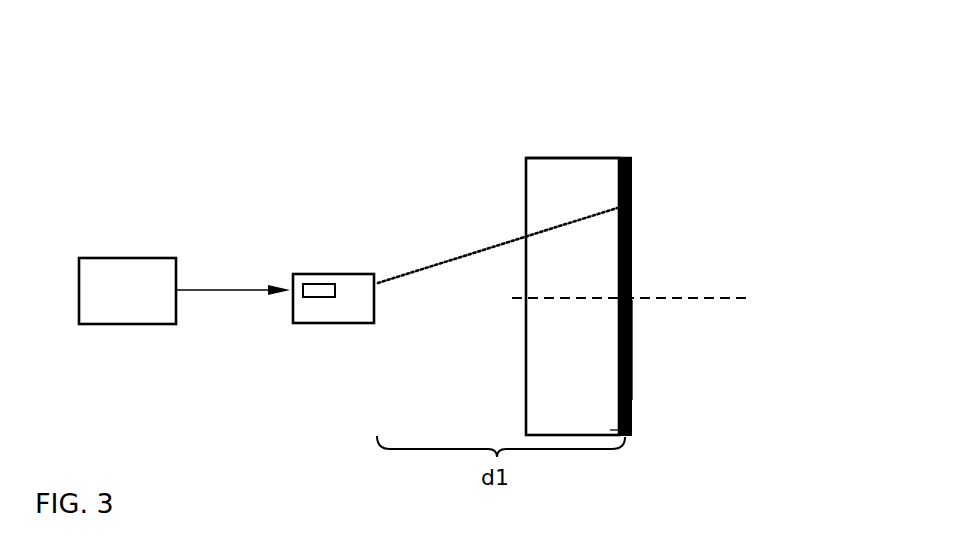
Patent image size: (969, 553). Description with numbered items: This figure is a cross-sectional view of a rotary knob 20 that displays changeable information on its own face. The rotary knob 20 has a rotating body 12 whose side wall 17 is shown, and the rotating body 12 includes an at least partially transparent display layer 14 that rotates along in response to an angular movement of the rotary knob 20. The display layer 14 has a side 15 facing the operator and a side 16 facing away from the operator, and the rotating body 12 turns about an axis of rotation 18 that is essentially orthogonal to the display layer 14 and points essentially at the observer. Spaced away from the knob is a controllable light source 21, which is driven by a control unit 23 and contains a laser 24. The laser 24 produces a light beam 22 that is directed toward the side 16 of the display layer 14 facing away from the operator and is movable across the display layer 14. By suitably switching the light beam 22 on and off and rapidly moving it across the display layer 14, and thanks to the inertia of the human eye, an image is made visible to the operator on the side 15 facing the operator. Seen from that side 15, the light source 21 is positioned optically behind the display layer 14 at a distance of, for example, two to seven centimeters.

The rotating body 12 is at (579, 194).
The display layer 14 is at (625, 233).
The side facing an operator 15 is at (632, 343).
The side facing away from the operator 16 is at (615, 420).
The side wall 17 is at (552, 159).
The axis of rotation 18 is at (723, 298).
The rotary knob 20 is at (620, 249).
The light source 21 is at (332, 275).
The light beam 22 is at (427, 267).
The control unit 23 is at (130, 260).
The laser 24 is at (313, 292).